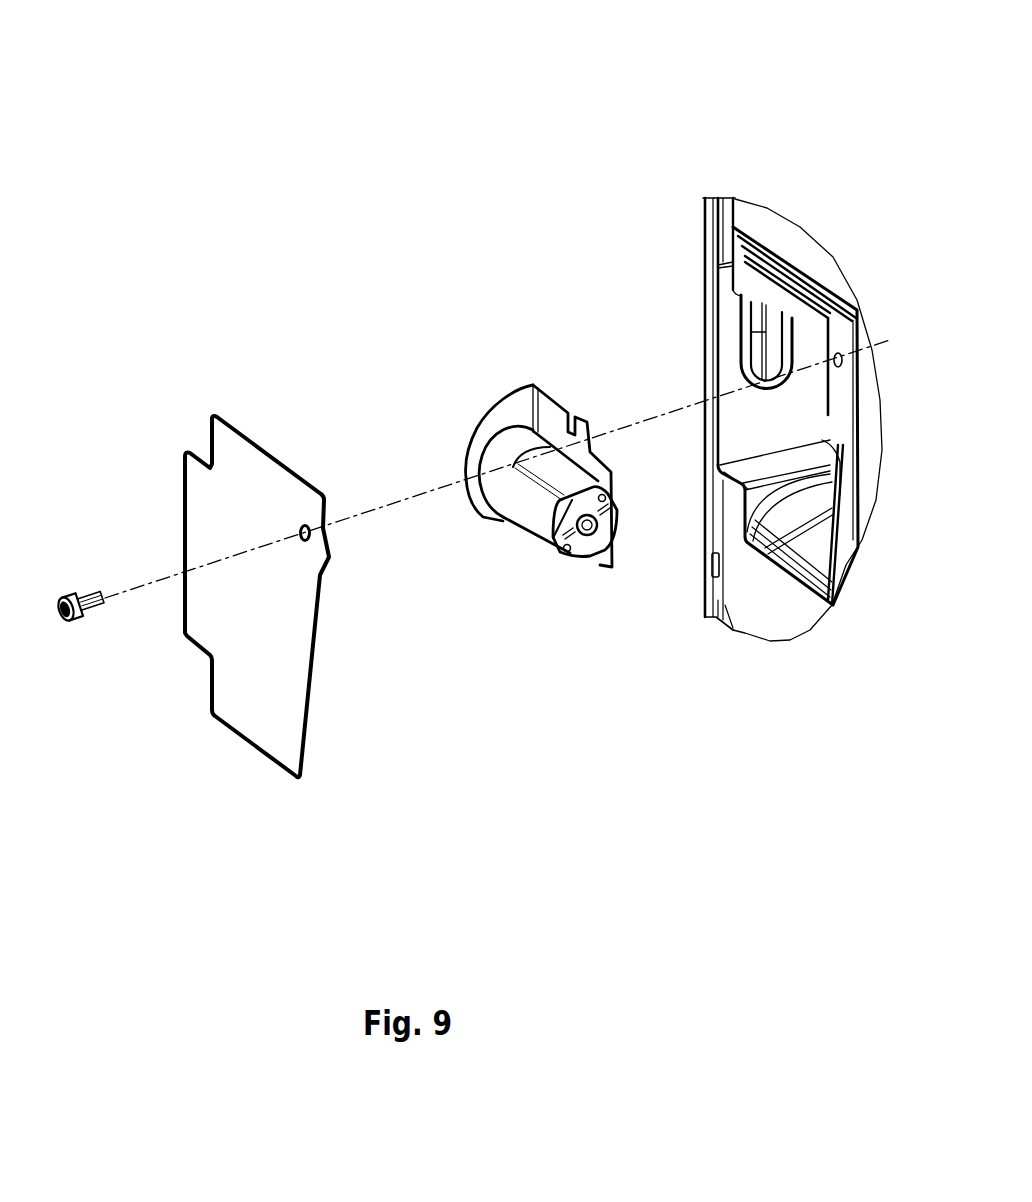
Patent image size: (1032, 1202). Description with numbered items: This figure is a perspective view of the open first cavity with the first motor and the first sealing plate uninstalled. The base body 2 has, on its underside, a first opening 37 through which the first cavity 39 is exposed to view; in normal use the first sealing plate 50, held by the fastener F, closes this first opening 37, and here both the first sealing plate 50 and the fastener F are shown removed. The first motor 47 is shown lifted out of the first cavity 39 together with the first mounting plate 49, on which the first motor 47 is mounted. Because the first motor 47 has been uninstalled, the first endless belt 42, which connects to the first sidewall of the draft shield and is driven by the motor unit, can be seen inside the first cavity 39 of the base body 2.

The base body 2 is at (715, 202).
The first opening 37 is at (738, 425).
The first cavity 39 is at (818, 468).
The first endless belt 42 is at (733, 340).
The first motor 47 is at (585, 543).
The first mounting plate 49 is at (523, 402).
The first sealing plate 50 is at (257, 702).
The fastener F is at (79, 622).